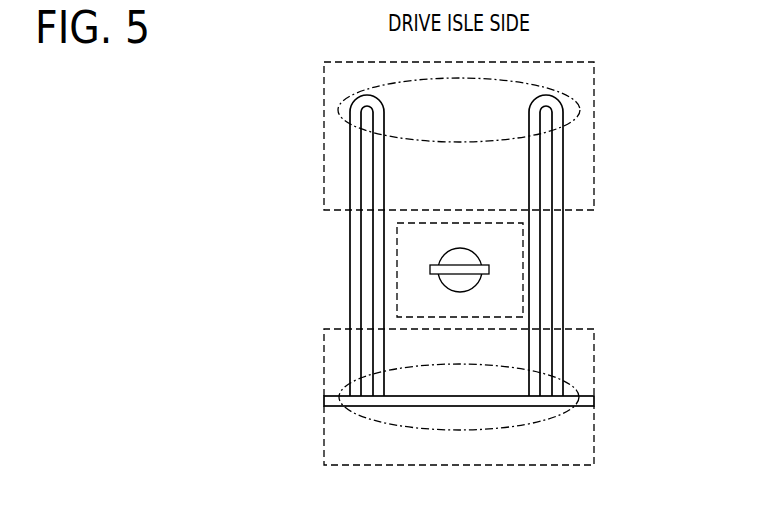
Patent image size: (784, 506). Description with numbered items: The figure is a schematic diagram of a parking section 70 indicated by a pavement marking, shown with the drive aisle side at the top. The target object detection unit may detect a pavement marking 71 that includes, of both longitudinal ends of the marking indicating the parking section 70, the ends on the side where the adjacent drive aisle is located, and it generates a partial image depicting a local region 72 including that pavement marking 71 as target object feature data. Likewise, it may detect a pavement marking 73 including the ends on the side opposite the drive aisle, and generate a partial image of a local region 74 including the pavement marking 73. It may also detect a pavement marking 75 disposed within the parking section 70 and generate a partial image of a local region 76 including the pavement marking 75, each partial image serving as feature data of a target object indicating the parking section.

The parking section 70 is at (322, 117).
The pavement marking 71 is at (565, 98).
The local region 72 is at (596, 80).
The pavement marking 73 is at (572, 407).
The local region 74 is at (594, 366).
The pavement marking 75 is at (430, 268).
The local region 76 is at (523, 271).